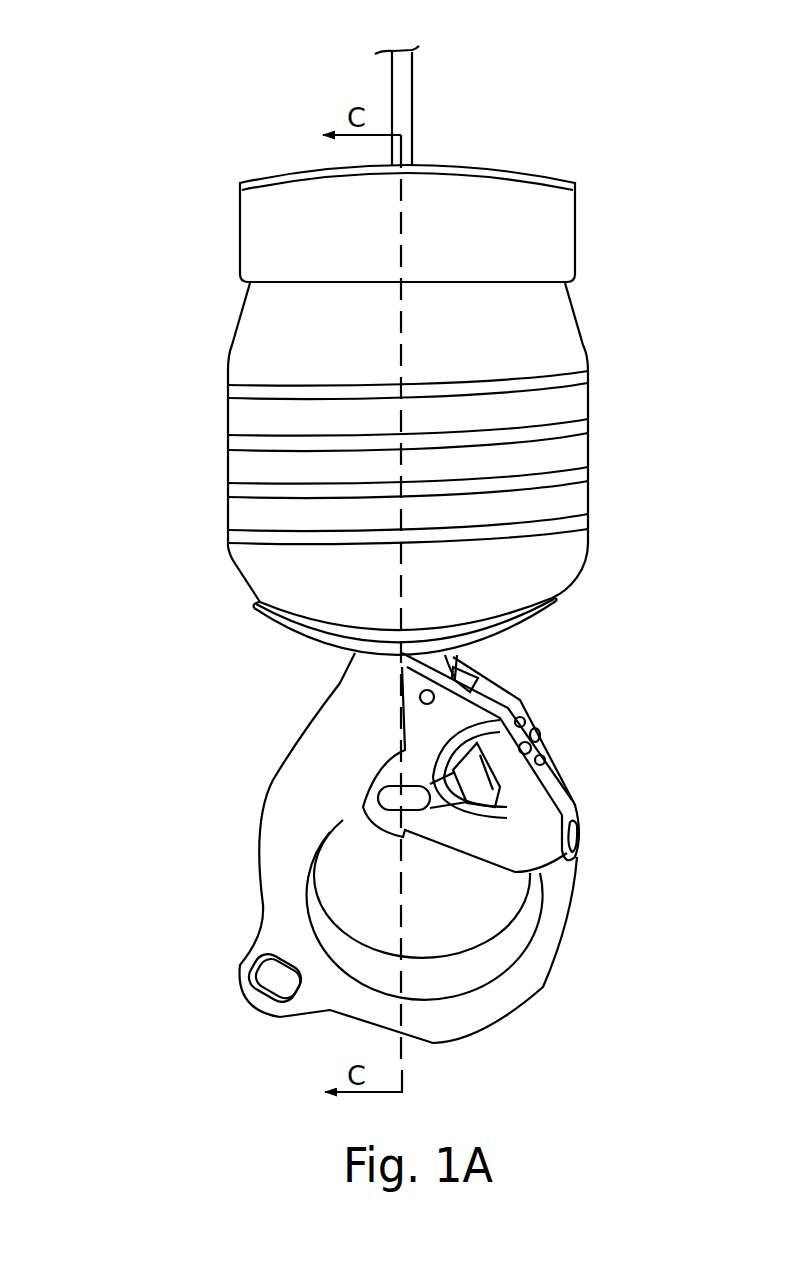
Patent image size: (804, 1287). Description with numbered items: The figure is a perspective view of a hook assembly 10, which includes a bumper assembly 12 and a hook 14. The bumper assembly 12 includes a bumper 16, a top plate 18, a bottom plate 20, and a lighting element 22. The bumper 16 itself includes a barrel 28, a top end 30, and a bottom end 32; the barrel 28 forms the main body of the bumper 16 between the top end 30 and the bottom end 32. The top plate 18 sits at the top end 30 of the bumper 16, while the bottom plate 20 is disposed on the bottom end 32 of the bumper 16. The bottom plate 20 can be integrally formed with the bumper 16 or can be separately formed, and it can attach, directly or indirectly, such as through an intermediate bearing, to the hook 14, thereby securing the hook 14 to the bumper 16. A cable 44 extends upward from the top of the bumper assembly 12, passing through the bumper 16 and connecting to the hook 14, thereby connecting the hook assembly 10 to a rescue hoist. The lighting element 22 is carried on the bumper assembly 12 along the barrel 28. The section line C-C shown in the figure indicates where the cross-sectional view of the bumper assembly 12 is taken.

The hook assembly 10 is at (114, 93).
The bumper assembly 12 is at (230, 337).
The hook 14 is at (278, 778).
The bumper 16 is at (583, 328).
The top plate 18 is at (577, 232).
The bottom plate 20 is at (526, 640).
The lighting element 22 is at (569, 427).
The barrel 28 is at (590, 400).
The top end 30 is at (573, 300).
The bottom end 32 is at (547, 565).
The cable 44 is at (412, 98).